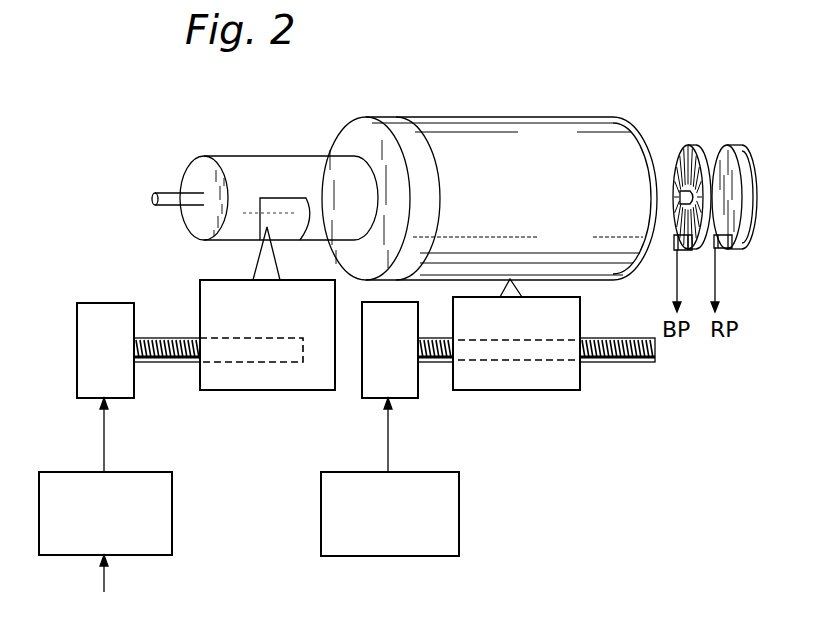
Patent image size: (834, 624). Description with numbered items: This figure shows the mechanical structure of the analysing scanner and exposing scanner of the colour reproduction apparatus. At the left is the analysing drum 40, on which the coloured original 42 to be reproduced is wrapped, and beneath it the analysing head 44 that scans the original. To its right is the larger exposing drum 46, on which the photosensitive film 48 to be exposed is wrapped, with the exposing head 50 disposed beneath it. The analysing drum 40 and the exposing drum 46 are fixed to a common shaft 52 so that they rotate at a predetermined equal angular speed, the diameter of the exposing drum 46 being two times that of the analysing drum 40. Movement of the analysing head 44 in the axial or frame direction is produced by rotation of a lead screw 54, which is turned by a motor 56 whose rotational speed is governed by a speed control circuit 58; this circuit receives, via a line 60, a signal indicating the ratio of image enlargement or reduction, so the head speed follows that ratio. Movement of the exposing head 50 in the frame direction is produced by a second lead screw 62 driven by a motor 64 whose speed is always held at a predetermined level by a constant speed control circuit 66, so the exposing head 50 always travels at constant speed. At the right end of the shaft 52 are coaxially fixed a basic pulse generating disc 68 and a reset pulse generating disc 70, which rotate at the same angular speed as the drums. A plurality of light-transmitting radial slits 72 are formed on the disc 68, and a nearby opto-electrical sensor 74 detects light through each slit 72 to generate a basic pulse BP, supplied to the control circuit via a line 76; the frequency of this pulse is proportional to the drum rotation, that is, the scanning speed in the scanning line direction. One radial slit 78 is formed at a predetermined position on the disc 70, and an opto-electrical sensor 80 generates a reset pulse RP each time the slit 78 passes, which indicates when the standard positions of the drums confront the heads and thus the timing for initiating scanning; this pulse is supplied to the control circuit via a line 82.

The analysing drum 40 is at (242, 157).
The coloured original 42 is at (288, 206).
The analysing head 44 is at (200, 283).
The exposing drum 46 is at (524, 117).
The photosensitive film 48 is at (583, 136).
The exposing head 50 is at (562, 390).
The common shaft 52 is at (164, 191).
The lead screw 54 is at (170, 363).
The motor 56 is at (104, 303).
The speed control circuit 58 is at (155, 474).
The line 60 is at (108, 577).
The lead screw 62 is at (627, 364).
The motor 64 is at (405, 398).
The constant speed control circuit 66 is at (452, 474).
The basic pulse generating disc 68 is at (700, 146).
The reset pulse generating disc 70 is at (731, 146).
The light-transmitting radial slits 72 is at (682, 160).
The opto-electrical sensor 74 is at (673, 251).
The line 76 is at (678, 291).
The radial slit 78 is at (758, 188).
The opto-electrical sensor 80 is at (729, 255).
The line 82 is at (716, 290).